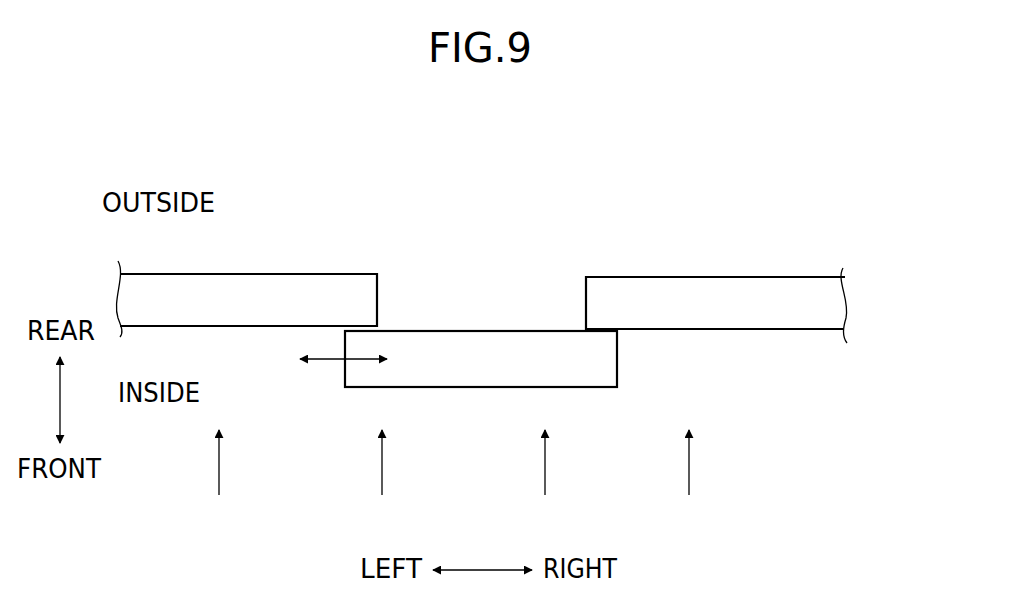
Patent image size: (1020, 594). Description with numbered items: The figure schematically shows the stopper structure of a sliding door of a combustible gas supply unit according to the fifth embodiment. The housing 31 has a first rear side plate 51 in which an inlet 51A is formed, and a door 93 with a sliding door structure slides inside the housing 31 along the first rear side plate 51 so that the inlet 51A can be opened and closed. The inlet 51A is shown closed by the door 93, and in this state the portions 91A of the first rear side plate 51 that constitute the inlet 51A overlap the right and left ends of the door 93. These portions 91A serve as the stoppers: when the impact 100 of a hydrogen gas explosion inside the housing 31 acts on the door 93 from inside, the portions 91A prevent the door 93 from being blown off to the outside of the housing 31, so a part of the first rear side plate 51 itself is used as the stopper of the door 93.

The housing 31 is at (852, 240).
The first rear side plate 51 is at (235, 290).
The inlet 51A is at (546, 294).
The portions constituting the inlet 91A is at (355, 303).
The door 93 is at (480, 348).
The impact 100 is at (219, 466).